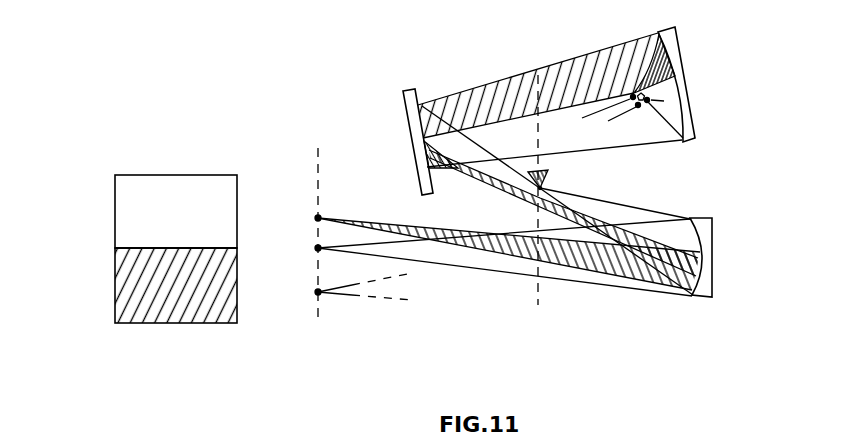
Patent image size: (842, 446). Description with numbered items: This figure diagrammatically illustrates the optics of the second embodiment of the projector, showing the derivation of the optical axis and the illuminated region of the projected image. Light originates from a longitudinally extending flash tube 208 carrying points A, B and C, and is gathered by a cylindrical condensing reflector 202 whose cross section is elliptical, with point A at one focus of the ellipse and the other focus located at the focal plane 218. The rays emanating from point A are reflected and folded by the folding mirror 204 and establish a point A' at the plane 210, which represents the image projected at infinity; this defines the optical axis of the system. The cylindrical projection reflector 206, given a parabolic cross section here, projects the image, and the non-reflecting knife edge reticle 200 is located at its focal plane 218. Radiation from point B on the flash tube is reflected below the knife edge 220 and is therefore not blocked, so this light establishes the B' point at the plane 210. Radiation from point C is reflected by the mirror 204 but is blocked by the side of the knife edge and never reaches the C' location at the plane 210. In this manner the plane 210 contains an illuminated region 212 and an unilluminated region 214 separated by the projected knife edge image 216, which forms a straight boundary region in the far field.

The non-reflecting knife edge reticle 200 is at (553, 168).
The cylindrical condensing reflector 202 is at (692, 73).
The folding mirror 204 is at (405, 91).
The cylindrical projection reflector 206 is at (713, 252).
The flash tube 208 is at (644, 106).
The plane 210 is at (317, 328).
The illuminated region 212 is at (182, 183).
The unilluminated region 214 is at (182, 339).
The projected knife edge image 216 is at (113, 248).
The focal plane 218 is at (537, 310).
The knife edge 220 is at (540, 188).